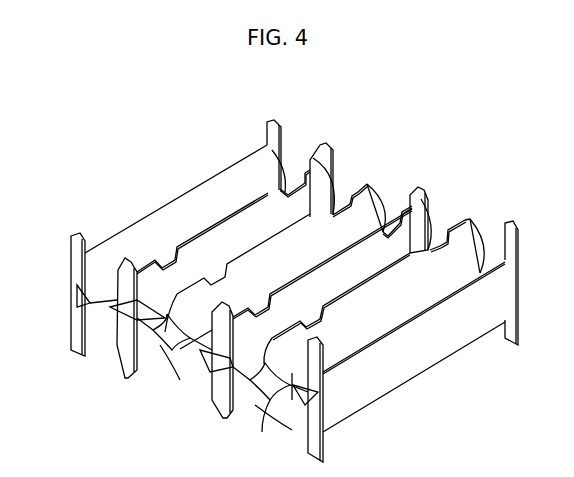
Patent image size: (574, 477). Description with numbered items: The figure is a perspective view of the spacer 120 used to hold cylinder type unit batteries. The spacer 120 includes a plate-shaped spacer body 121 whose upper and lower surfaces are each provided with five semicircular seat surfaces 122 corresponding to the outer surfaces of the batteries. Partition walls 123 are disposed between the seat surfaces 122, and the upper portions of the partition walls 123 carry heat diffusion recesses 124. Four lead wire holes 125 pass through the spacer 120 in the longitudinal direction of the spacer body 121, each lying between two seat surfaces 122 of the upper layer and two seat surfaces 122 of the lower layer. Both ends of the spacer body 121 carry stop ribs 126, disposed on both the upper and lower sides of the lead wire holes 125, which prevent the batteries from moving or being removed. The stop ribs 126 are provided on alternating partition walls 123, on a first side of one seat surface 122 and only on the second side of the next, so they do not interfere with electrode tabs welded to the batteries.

The spacer 120 is at (72, 128).
The spacer body 121 is at (440, 227).
The seat surface 122 is at (251, 357).
The partition wall 123 is at (311, 217).
The heat diffusion recess 124 is at (353, 193).
The lead wire hole 125 is at (167, 352).
The stop rib 126 is at (122, 290).